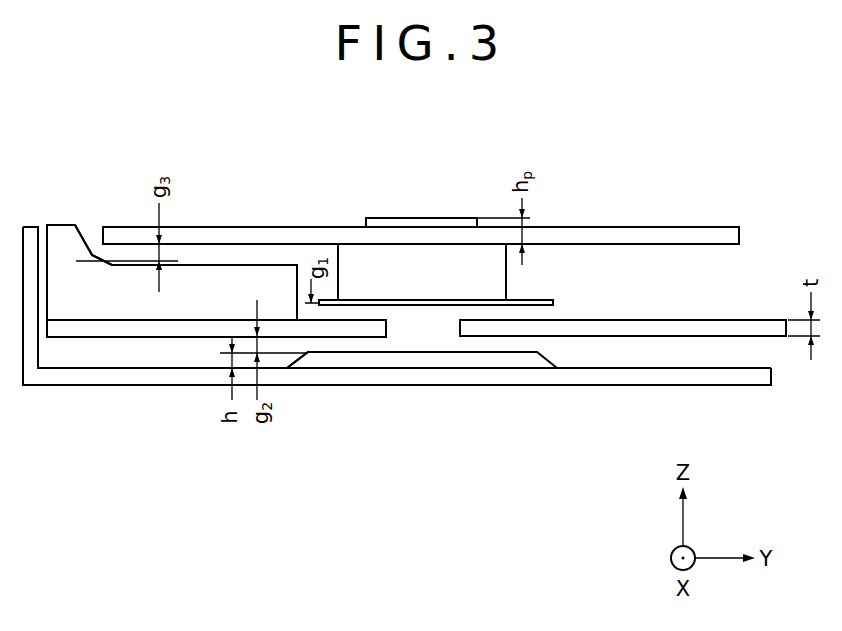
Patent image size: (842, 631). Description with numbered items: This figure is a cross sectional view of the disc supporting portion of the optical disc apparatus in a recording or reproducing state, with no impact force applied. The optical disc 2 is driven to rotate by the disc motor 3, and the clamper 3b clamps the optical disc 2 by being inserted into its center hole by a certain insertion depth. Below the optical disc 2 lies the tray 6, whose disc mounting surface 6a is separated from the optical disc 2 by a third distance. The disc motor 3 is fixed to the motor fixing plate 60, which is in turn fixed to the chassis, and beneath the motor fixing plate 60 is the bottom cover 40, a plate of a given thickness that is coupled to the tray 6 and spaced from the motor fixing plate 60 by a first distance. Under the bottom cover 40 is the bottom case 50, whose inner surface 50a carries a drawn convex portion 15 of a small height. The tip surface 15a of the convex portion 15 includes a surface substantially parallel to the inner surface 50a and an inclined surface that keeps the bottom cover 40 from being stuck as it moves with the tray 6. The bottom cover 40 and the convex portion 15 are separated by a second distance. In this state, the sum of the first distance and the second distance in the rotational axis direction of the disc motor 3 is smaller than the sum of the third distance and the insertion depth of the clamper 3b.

The optical disc 2 is at (643, 227).
The disc motor 3 is at (512, 278).
The clamper 3b is at (380, 218).
The tray 6 is at (62, 222).
The disc mounting surface 6a is at (95, 255).
The convex portion 15 is at (469, 360).
The tip surface 15a is at (403, 347).
The bottom cover 40 is at (93, 338).
The bottom case 50 is at (582, 387).
The inner surface 50a is at (632, 367).
The motor fixing plate 60 is at (555, 297).